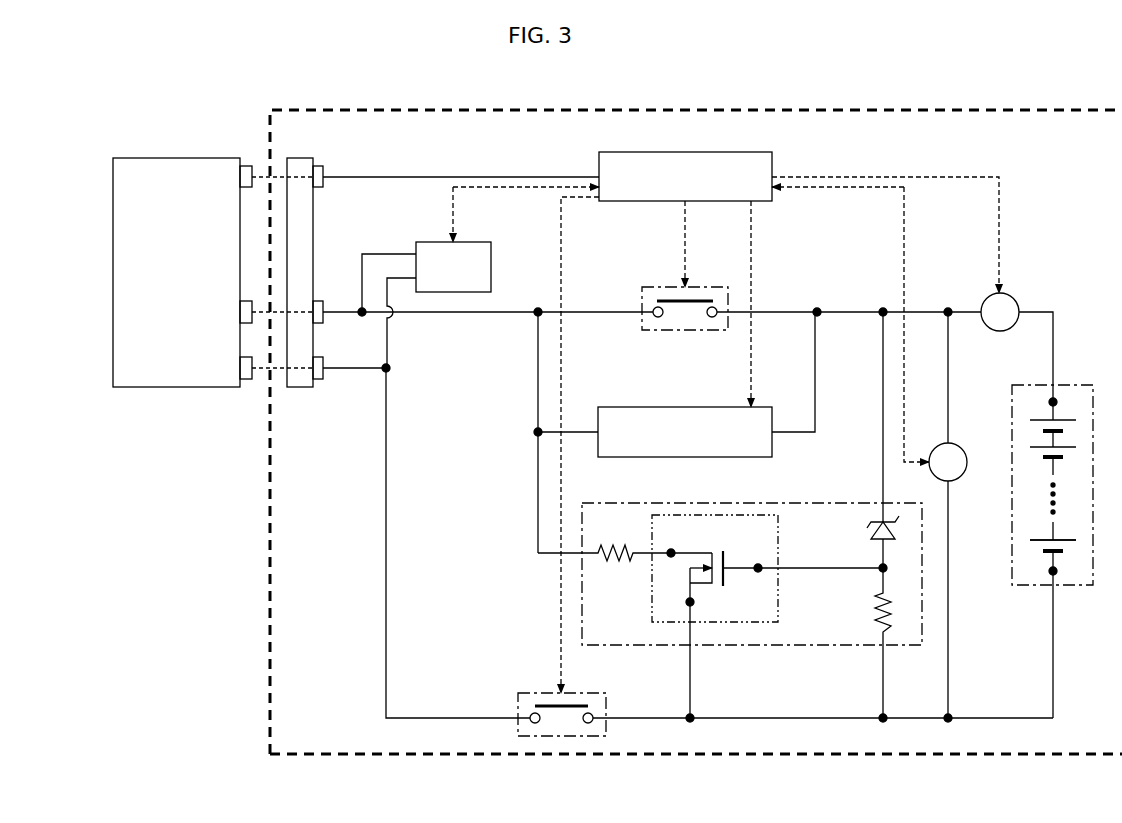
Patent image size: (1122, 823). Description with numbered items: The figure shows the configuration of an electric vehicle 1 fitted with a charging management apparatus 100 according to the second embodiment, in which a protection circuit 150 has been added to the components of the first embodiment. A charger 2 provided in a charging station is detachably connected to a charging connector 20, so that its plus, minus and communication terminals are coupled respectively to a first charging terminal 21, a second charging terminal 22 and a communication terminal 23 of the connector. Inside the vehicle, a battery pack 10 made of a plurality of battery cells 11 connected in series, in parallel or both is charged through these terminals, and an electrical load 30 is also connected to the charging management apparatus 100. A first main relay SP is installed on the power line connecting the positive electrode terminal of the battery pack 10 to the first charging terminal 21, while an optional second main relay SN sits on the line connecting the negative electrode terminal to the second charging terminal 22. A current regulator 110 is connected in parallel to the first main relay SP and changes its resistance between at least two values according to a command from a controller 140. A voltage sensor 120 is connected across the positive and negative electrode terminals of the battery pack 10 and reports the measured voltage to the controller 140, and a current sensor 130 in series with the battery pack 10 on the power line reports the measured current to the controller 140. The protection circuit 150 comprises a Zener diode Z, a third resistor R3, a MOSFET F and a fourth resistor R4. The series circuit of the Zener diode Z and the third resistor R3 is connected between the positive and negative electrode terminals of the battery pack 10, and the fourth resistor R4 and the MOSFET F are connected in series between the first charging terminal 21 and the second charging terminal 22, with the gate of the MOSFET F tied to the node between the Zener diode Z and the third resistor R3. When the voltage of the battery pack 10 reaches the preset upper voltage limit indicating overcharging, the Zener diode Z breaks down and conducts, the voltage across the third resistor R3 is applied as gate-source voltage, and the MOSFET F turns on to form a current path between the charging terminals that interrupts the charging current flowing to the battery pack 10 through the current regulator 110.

The electric vehicle 1 is at (686, 110).
The charger 2 is at (183, 160).
The battery pack 10 is at (1056, 472).
The battery cell 11 is at (1066, 539).
The charging connector 20 is at (300, 160).
The first charging terminal 21 is at (318, 325).
The second charging terminal 22 is at (318, 381).
The communication terminal 23 is at (318, 190).
The electrical load 30 is at (470, 243).
The charging management apparatus 100 is at (509, 438).
The current regulator 110 is at (685, 407).
The voltage sensor 120 is at (975, 435).
The current sensor 130 is at (1026, 285).
The controller 140 is at (685, 152).
The protection circuit 150 is at (730, 596).
The first main relay SP is at (690, 287).
The second main relay SN is at (573, 693).
The MOSFET F is at (778, 540).
The Zener diode Z is at (868, 526).
The third resistor R3 is at (868, 643).
The fourth resistor R4 is at (625, 542).